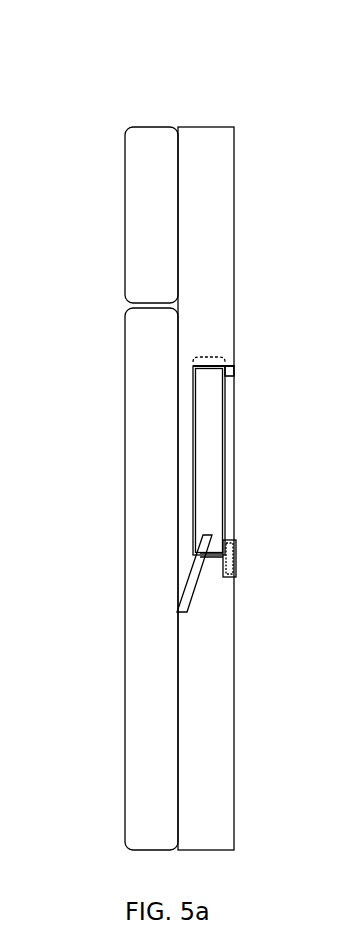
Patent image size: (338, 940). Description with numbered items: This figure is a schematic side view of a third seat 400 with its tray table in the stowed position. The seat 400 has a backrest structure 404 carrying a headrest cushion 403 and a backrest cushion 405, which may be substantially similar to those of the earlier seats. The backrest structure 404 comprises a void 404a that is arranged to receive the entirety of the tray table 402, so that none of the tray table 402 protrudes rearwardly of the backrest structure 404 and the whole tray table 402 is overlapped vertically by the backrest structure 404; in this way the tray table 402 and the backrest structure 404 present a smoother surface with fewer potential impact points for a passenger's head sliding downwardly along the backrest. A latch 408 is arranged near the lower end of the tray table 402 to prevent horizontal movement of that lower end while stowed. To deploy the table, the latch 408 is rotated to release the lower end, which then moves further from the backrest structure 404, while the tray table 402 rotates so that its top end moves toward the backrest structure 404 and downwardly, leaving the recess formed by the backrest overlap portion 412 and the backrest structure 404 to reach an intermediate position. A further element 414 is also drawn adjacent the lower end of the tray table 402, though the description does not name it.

The third seat 400 is at (138, 92).
The tray table 402 is at (214, 452).
The headrest cushion 403 is at (141, 198).
The backrest structure 404 is at (215, 138).
The void 404a is at (210, 355).
The backrest cushion 405 is at (138, 318).
The latch 408 is at (237, 565).
The backrest overlap portion 412 is at (233, 368).
The lever arm 414 is at (190, 580).